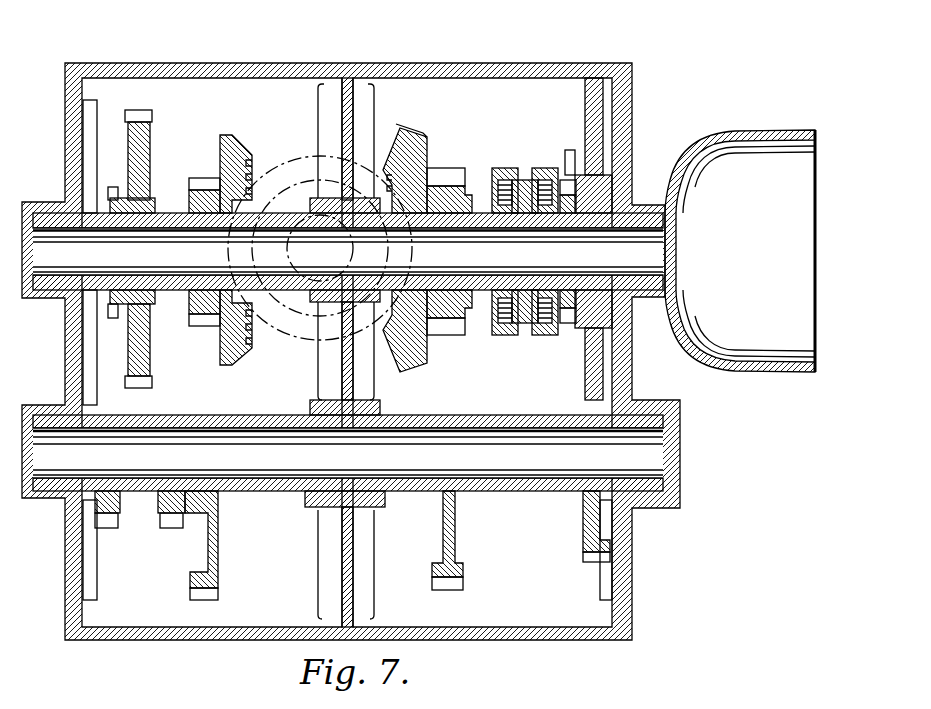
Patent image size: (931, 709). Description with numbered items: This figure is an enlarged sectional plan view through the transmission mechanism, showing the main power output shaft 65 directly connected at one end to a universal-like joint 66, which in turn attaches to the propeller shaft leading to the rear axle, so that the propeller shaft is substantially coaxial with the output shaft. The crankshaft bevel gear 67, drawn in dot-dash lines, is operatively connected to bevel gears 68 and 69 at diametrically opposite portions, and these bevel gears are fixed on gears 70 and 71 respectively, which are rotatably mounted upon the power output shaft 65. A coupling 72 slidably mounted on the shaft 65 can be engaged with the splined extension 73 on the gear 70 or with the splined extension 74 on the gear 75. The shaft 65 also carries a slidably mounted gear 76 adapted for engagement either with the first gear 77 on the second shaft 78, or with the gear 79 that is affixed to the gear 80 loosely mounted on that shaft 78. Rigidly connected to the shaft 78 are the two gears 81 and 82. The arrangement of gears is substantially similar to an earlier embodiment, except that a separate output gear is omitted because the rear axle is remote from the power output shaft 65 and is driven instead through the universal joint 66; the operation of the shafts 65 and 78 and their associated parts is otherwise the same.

The power output shaft 65 is at (72, 257).
The universal joint 66 is at (718, 162).
The crankshaft bevel gear 67 is at (300, 160).
The bevel gear 68 is at (425, 143).
The bevel gear 69 is at (228, 140).
The gear 70 is at (455, 178).
The gear 71 is at (205, 183).
The coupling 72 is at (530, 180).
The splined extension 73 is at (495, 183).
The splined extension 74 is at (570, 180).
The gear 75 is at (605, 150).
The gear 76 is at (147, 118).
The first gear 77 is at (105, 520).
The shaft 78 is at (540, 465).
The gear 79 is at (172, 522).
The gear 80 is at (218, 548).
The gear 81 is at (465, 580).
The gear 82 is at (585, 545).